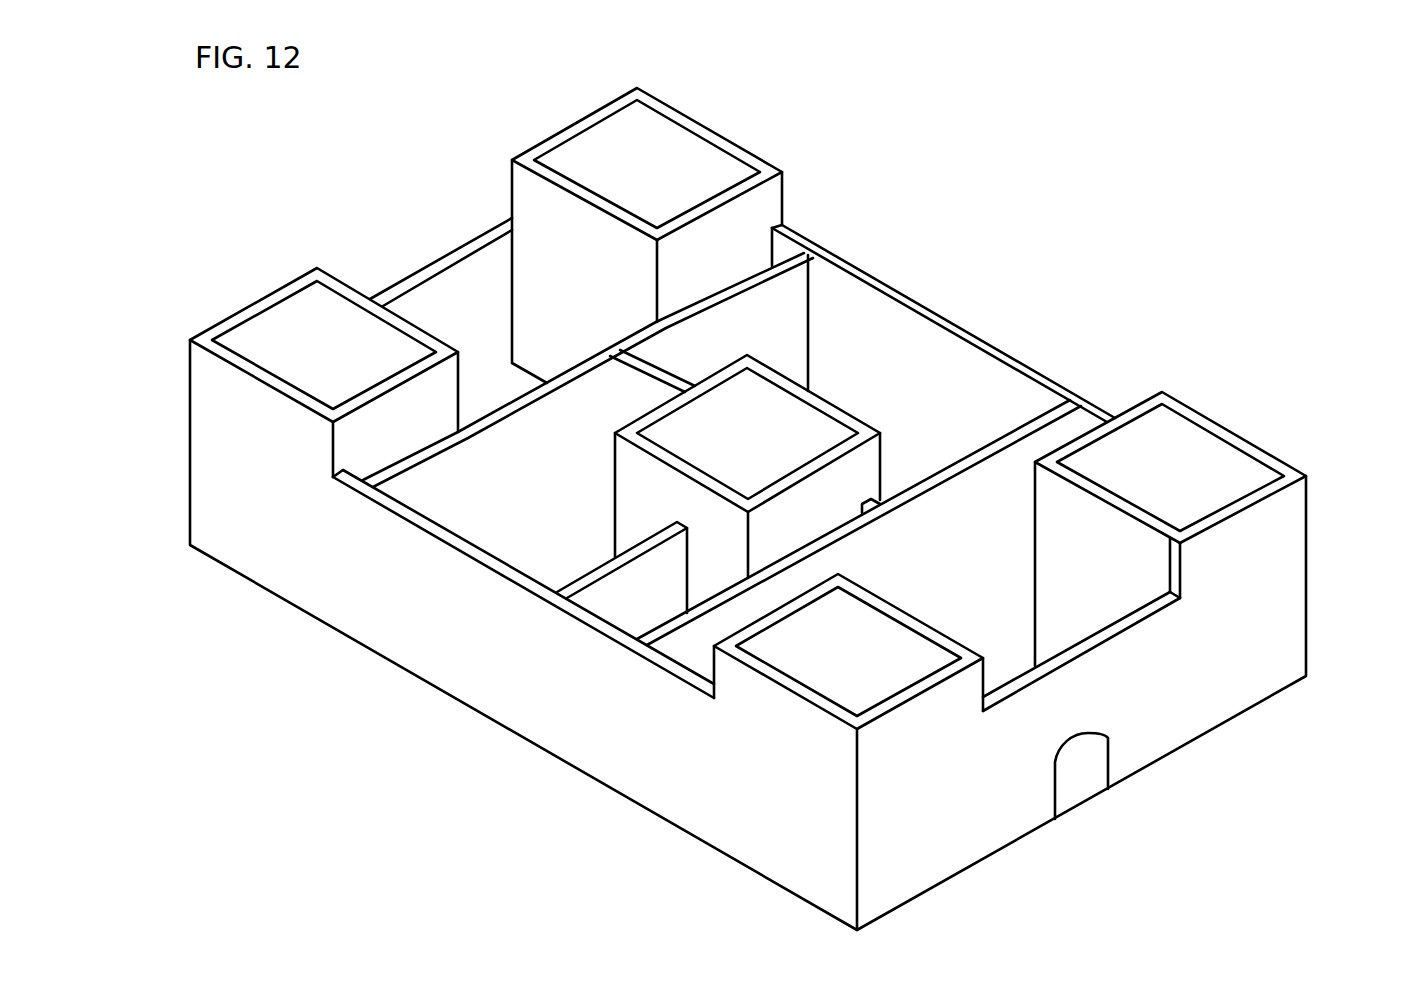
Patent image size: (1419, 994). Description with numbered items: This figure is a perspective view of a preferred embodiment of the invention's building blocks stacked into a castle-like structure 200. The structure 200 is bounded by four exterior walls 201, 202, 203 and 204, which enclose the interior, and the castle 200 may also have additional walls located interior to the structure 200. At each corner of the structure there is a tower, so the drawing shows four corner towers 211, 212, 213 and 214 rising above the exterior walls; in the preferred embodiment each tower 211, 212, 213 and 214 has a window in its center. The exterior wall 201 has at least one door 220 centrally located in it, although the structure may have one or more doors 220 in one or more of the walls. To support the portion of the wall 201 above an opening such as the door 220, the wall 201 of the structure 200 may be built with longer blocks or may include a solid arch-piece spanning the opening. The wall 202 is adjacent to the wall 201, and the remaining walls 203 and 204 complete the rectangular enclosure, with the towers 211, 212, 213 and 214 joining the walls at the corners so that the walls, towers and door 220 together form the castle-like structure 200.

The castle-like structure 200 is at (775, 509).
The exterior wall 201 is at (1200, 708).
The exterior wall 202 is at (508, 713).
The exterior wall 203 is at (447, 262).
The exterior wall 204 is at (960, 332).
The tower 211 is at (1298, 498).
The tower 212 is at (958, 690).
The tower 213 is at (208, 368).
The tower 214 is at (770, 196).
The door 220 is at (1075, 790).